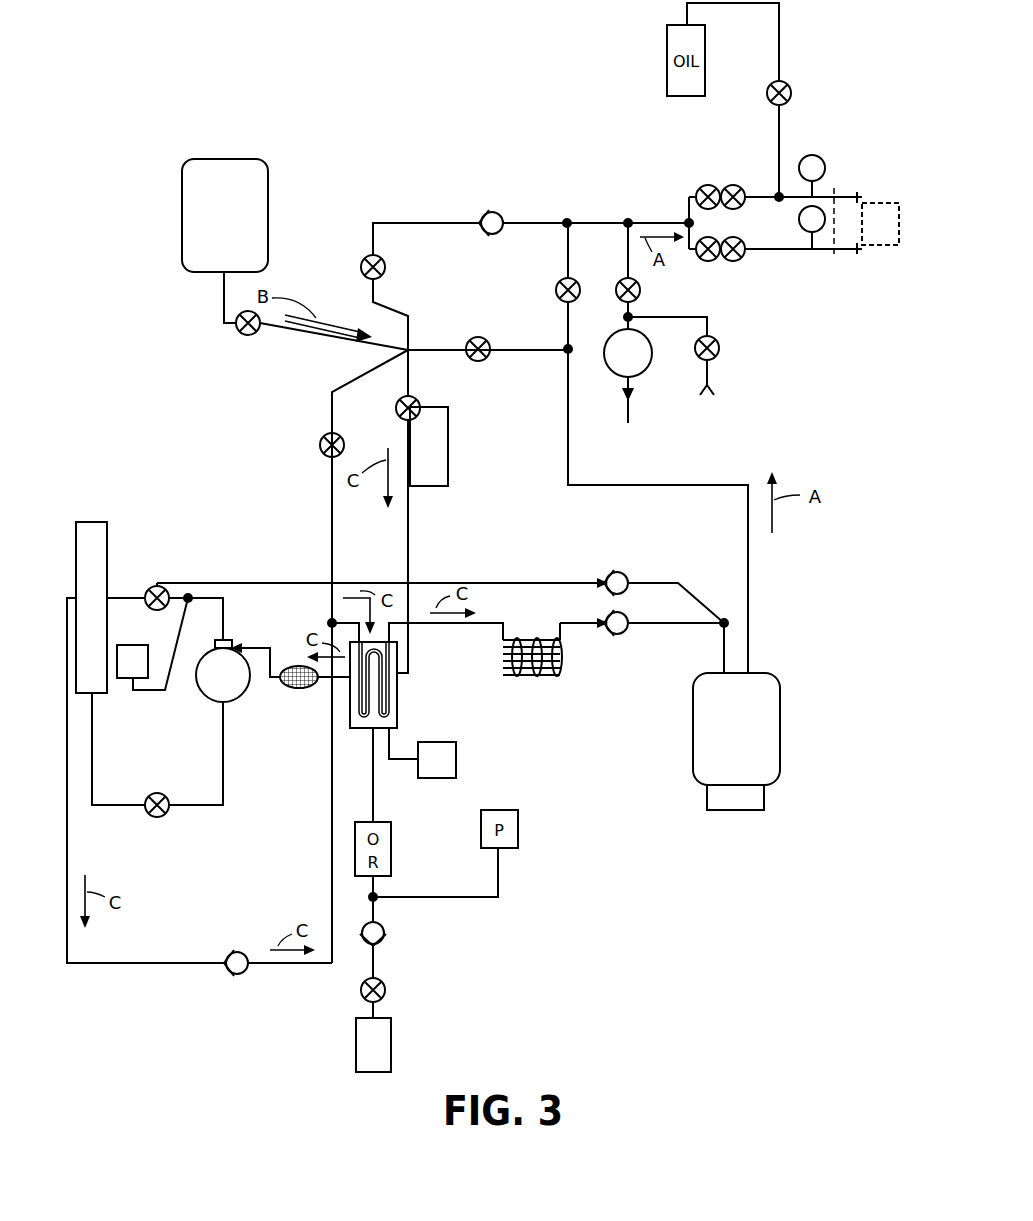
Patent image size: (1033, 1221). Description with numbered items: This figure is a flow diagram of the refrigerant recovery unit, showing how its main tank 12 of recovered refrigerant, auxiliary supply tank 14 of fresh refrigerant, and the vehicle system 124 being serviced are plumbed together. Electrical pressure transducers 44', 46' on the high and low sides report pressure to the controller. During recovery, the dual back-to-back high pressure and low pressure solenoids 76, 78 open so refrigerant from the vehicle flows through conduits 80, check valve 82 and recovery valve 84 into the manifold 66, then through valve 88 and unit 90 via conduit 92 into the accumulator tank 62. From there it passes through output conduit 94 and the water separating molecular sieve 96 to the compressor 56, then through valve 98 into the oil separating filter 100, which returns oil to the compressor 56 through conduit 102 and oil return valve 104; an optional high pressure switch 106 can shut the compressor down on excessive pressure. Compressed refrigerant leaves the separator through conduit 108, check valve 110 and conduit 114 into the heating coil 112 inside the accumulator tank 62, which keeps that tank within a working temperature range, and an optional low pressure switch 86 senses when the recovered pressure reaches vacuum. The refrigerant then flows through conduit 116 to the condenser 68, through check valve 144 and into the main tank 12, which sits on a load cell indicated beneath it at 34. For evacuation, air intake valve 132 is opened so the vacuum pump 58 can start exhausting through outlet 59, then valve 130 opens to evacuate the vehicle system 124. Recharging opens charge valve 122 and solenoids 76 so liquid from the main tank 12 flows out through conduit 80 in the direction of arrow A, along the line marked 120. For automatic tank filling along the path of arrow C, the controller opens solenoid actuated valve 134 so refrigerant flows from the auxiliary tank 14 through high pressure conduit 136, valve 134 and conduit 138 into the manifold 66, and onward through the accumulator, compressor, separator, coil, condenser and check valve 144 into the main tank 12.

The main tank 12 is at (782, 752).
The auxiliary supply tank 14 is at (213, 158).
The level control 34 is at (766, 800).
The electrical pressure transducer 44' is at (843, 155).
The electrical pressure transducer 46' is at (785, 227).
The compressor 56 is at (245, 690).
The vacuum pump 58 is at (650, 375).
The outlet 59 is at (632, 424).
The accumulator tank 62 is at (398, 690).
The manifold 66 is at (412, 346).
The condenser 68 is at (530, 680).
The high pressure solenoids 76 is at (728, 185).
The low pressure solenoids 78 is at (728, 262).
The conduits 80 is at (600, 222).
The check valve 82 is at (486, 212).
The recovery valve 84 is at (362, 262).
The low pressure switch 86 is at (457, 760).
The valve 88 is at (397, 412).
The unit 90 is at (448, 461).
The conduit 92 is at (410, 532).
The output conduit 94 is at (325, 690).
The water separating molecular sieve 96 is at (296, 665).
The valve 98 is at (157, 586).
The oil separating filter 100 is at (95, 522).
The conduit 102 is at (92, 730).
The oil return valve 104 is at (157, 818).
The high pressure switch 106 is at (128, 645).
The conduit 108 is at (67, 872).
The check valve 110 is at (236, 950).
The heating coil 112 is at (373, 738).
The conduit 114 is at (336, 616).
The conduit 116 is at (445, 628).
The conduit 120 is at (750, 590).
The charge valve 122 is at (558, 280).
The vehicle system 124 is at (888, 246).
The valve 130 is at (620, 280).
The air intake valve 132 is at (719, 350).
The solenoid actuated valve 134 is at (255, 335).
The high pressure conduit 136 is at (224, 300).
The conduit 138 is at (338, 340).
The check valve 144 is at (614, 637).